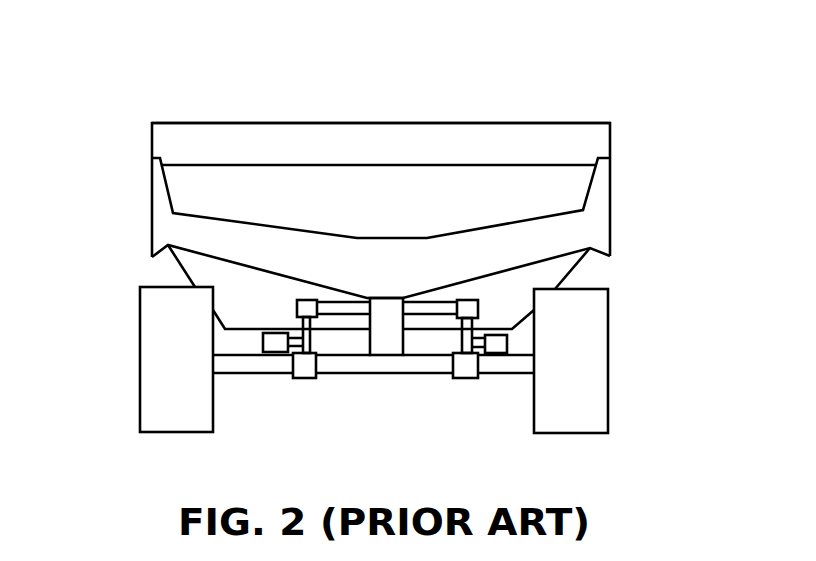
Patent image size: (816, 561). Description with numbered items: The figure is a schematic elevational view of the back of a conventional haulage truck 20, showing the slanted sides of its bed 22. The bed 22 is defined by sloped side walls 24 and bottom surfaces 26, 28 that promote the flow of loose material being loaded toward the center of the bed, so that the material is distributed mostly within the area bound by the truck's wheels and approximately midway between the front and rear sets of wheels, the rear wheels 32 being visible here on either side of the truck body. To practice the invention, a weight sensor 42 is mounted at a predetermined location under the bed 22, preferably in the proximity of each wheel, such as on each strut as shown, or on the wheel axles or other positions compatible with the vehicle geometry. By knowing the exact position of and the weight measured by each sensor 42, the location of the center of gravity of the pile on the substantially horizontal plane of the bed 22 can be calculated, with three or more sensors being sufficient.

The truck 20 is at (462, 115).
The bed 22 is at (612, 195).
The sloped side walls 24 is at (193, 277).
The bottom surface 26 is at (478, 202).
The bottom surface 28 is at (310, 292).
The rear wheels 32 is at (150, 362).
The weight sensor 42 is at (278, 342).